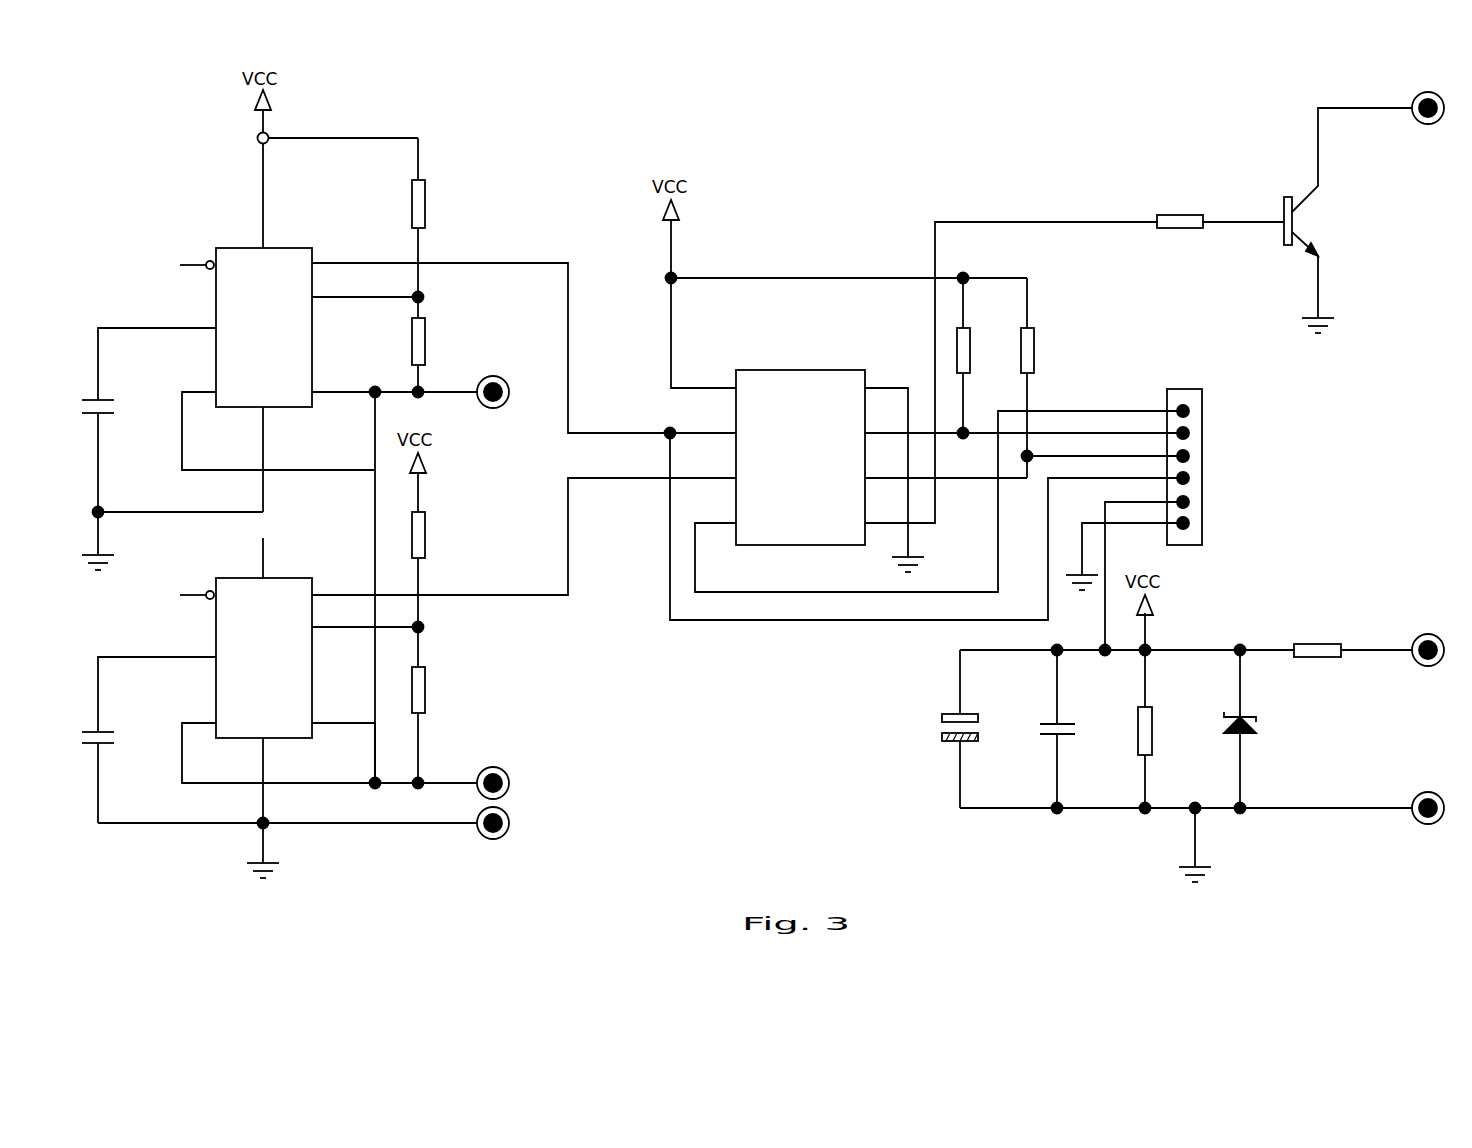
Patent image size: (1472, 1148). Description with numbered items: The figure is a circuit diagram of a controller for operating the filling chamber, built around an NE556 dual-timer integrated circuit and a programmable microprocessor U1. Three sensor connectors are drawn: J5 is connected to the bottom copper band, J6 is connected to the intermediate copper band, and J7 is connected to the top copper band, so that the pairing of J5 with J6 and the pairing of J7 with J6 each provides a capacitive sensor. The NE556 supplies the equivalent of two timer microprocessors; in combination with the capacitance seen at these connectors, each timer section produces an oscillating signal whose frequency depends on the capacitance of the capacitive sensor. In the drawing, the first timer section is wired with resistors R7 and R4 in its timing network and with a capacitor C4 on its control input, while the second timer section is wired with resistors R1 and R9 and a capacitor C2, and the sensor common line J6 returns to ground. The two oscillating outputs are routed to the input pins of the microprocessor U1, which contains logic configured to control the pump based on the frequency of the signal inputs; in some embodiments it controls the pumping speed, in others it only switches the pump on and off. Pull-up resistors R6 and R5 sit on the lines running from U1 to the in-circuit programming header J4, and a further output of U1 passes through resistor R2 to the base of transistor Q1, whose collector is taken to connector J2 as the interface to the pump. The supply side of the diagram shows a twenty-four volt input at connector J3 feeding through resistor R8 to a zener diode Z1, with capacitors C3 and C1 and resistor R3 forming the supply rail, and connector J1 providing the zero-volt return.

The microcontroller ST7LITEUS5 U1 is at (800, 457).
The resistor 120K R7 is at (445, 249).
The resistor 240K R4 is at (445, 355).
The resistor 120K R1 is at (445, 589).
The resistor 240K R9 is at (445, 724).
The resistor 3K3 R2 is at (1220, 224).
The resistor 3K3 R5 is at (1047, 378).
The resistor 10K R6 is at (983, 355).
The resistor 4K7 R3 is at (1164, 710).
The resistor 2K7 R8 is at (1317, 654).
The capacitor 100nF C1 is at (1078, 729).
The capacitor 10nF C2 is at (123, 774).
The capacitor 1uF C3 is at (951, 729).
The capacitor 10nF C4 is at (123, 482).
The zener diode BZX848 5v1 Z1 is at (1286, 729).
The transistor BC848B interface to pump Q1 is at (1364, 220).
The connector 0V J1 is at (1428, 811).
The connector D-out J2 is at (1429, 110).
The connector 24V J3 is at (1427, 651).
The in circuit programming header J4 is at (1186, 445).
The connector to bottom copper band J5 is at (496, 414).
The connector to intermediate copper band J6 is at (580, 823).
The connector to top copper band J7 is at (566, 783).